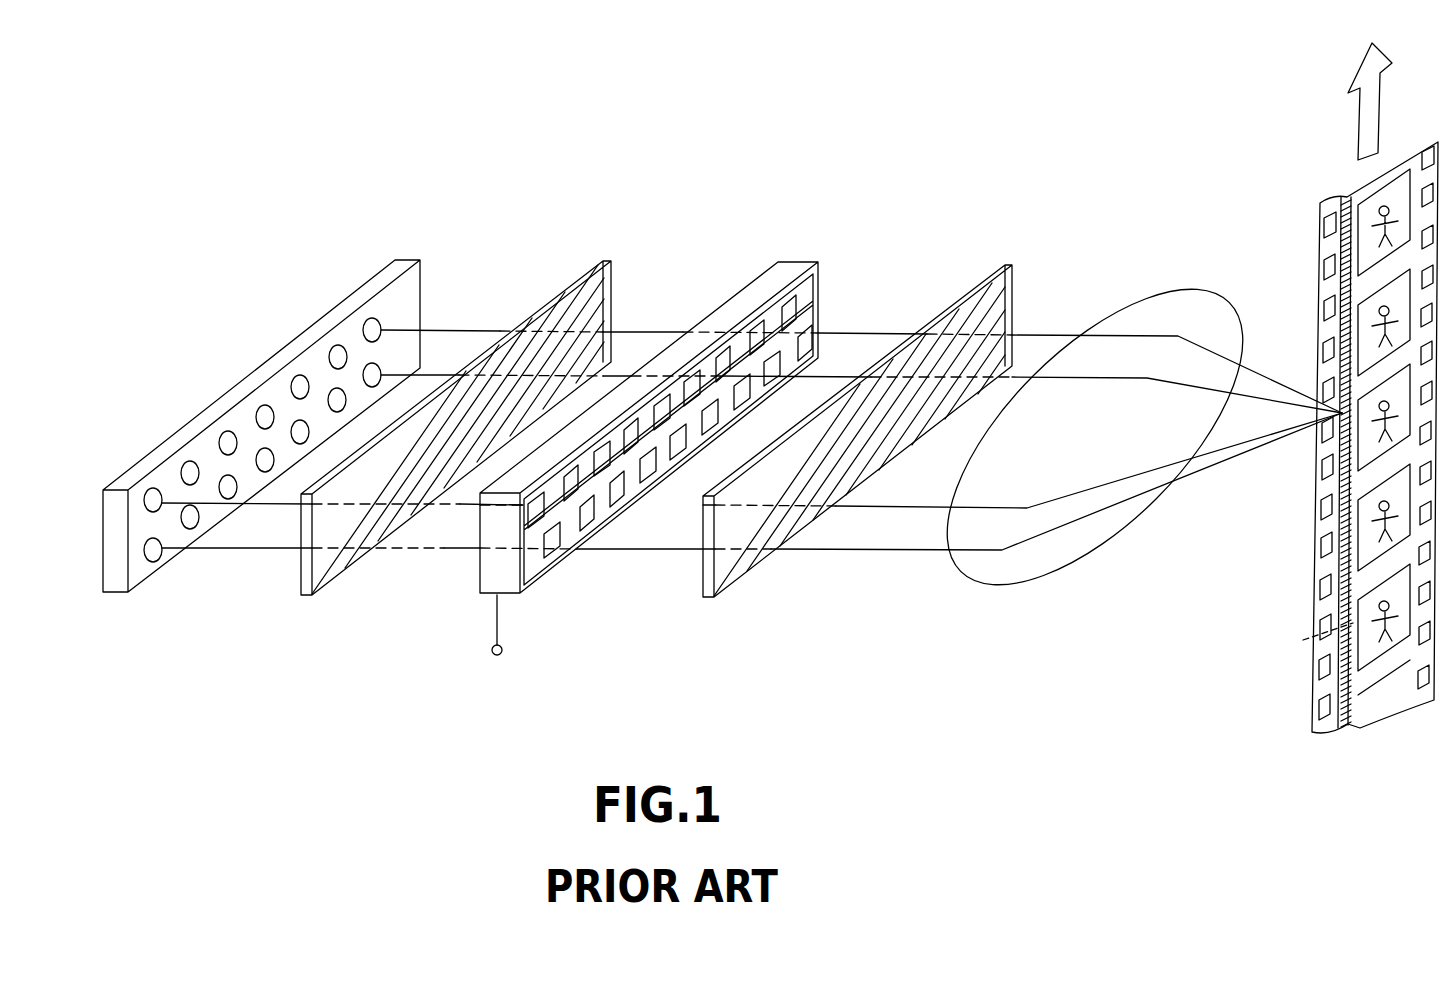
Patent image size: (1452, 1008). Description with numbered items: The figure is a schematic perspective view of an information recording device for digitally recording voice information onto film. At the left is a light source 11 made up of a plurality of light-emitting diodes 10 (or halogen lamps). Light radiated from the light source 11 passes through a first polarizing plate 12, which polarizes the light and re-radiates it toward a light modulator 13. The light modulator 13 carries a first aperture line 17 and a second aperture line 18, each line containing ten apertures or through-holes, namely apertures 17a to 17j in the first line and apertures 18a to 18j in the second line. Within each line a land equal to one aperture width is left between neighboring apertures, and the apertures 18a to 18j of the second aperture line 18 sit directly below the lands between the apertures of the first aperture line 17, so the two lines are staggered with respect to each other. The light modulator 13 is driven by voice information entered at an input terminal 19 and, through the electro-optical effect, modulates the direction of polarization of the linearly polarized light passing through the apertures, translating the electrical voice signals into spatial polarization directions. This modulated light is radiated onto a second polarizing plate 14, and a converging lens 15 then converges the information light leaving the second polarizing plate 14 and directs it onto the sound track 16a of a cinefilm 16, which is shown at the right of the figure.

The light-emitting diodes 10 is at (366, 325).
The light source 11 is at (261, 428).
The first polarizing plate 12 is at (593, 259).
The light modulator 13 is at (641, 430).
The second polarizing plate 14 is at (999, 260).
The converging lens 15 is at (1133, 282).
The cinefilm 16 is at (1332, 388).
The sound track 16a is at (1343, 523).
The first aperture line 17 is at (625, 419).
The aperture 17a is at (522, 505).
The aperture 17j is at (791, 306).
The second aperture line 18 is at (724, 453).
The aperture 18a is at (567, 532).
The aperture 18j is at (806, 338).
The input terminal 19 is at (497, 655).